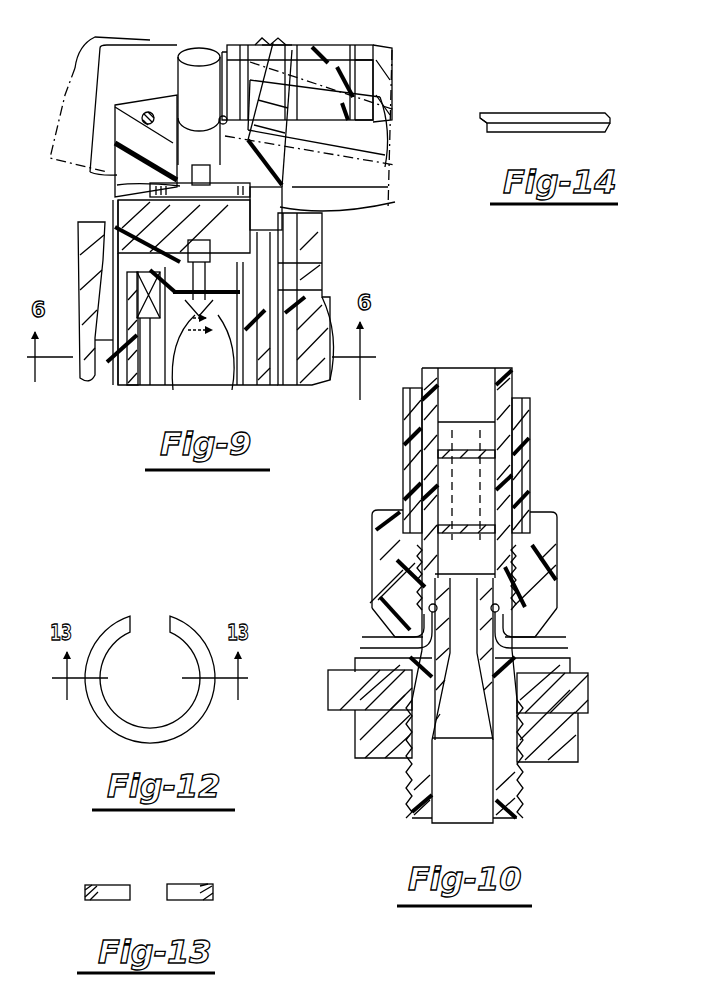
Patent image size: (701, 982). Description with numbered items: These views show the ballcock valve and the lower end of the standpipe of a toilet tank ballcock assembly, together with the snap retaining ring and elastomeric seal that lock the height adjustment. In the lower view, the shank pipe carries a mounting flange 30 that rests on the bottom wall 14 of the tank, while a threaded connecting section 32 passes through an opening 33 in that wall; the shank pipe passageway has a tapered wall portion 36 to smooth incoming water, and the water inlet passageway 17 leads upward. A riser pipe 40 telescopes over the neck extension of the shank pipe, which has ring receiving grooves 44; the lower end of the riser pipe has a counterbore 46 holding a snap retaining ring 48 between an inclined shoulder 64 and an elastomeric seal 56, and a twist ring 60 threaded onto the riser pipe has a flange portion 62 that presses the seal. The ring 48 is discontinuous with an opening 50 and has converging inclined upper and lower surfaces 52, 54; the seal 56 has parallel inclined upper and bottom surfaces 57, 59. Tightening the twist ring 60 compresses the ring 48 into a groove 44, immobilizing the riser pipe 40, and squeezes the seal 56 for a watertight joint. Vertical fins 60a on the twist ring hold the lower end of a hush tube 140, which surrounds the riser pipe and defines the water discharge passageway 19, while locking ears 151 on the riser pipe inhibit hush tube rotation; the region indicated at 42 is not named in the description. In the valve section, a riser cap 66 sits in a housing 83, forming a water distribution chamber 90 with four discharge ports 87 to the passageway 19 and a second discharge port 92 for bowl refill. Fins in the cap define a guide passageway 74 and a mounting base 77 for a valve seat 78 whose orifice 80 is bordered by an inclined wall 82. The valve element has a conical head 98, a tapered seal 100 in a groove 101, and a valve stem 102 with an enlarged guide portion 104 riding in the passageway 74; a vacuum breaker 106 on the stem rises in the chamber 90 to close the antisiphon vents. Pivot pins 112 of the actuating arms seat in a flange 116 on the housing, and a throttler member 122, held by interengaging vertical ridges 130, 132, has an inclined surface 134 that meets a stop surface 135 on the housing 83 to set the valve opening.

In FIG. 10, the bottom wall 14 is at (590, 675).
In FIG. 10, the water inlet passageway 17 is at (462, 372).
In FIG. 10, the water discharge passageway 19 is at (525, 400).
In FIG. 10, the mounting flange 30 is at (570, 658).
In FIG. 10, the threaded connecting section 32 is at (520, 802).
In FIG. 10, the opening 33 is at (355, 738).
In FIG. 10, the tapered wall portion 36 is at (470, 702).
In FIG. 9, the riser pipe 40 is at (260, 386).
In FIG. 10, the riser pipe 40 is at (531, 432).
In FIG. 10, the coupling assembly 42 is at (582, 537).
In FIG. 10, the ring receiving grooves 44 is at (440, 548).
In FIG. 10, the counterbore 46 is at (530, 605).
In FIG. 10, the snap retaining ring 48 is at (429, 606).
In FIG. 12, the snap retaining ring 48 is at (192, 728).
In FIG. 13, the snap retaining ring 48 is at (178, 883).
In FIG. 12, the opening 50 is at (152, 622).
In FIG. 13, the opening 50 is at (145, 884).
In FIG. 13, the inclined upper surface 52 is at (116, 850).
In FIG. 13, the inclined lower surface 54 is at (90, 900).
In FIG. 10, the elastomeric seal 56 is at (375, 637).
In FIG. 14, the elastomeric seal 56 is at (563, 132).
In FIG. 14, the inclined upper surface 57 is at (489, 114).
In FIG. 14, the inclined bottom surface 59 is at (484, 132).
In FIG. 10, the twist ring 60 is at (565, 523).
In FIG. 10, the vertical fins 60a is at (553, 510).
In FIG. 10, the flange portion 62 is at (565, 632).
In FIG. 10, the inclined shoulder 64 is at (518, 580).
In FIG. 9, the riser cap 66 is at (105, 230).
In FIG. 9, the circular guide passageway 74 is at (300, 258).
In FIG. 9, the mounting base 77 is at (112, 290).
In FIG. 9, the valve seat 78 is at (207, 336).
In FIG. 9, the central orifice 80 is at (108, 332).
In FIG. 9, the inclined wall 82 is at (140, 386).
In FIG. 9, the housing 83 is at (322, 240).
In FIG. 9, the discharge ports 87 is at (112, 270).
In FIG. 9, the water distribution chamber 90 is at (150, 185).
In FIG. 9, the second discharge port 92 is at (386, 205).
In FIG. 9, the conical head 98 is at (170, 386).
In FIG. 9, the tapered elastomeric seal 100 is at (330, 273).
In FIG. 9, the circular groove 101 is at (238, 386).
In FIG. 9, the valve stem 102 is at (266, 209).
In FIG. 9, the enlarged guide portion 104 is at (150, 190).
In FIG. 9, the vacuum breaker 106 is at (202, 116).
In FIG. 9, the pivot pins 112 is at (150, 112).
In FIG. 9, the flange 116 is at (115, 115).
In FIG. 9, the throttler member 122 is at (293, 45).
In FIG. 9, the vertical ridges 130 is at (378, 50).
In FIG. 9, the vertical ridges 132 is at (268, 55).
In FIG. 9, the inclined surface 134 is at (300, 198).
In FIG. 9, the stop surface 135 is at (312, 156).
In FIG. 9, the hush tube 140 is at (110, 378).
In FIG. 10, the locking ears 151 is at (531, 462).